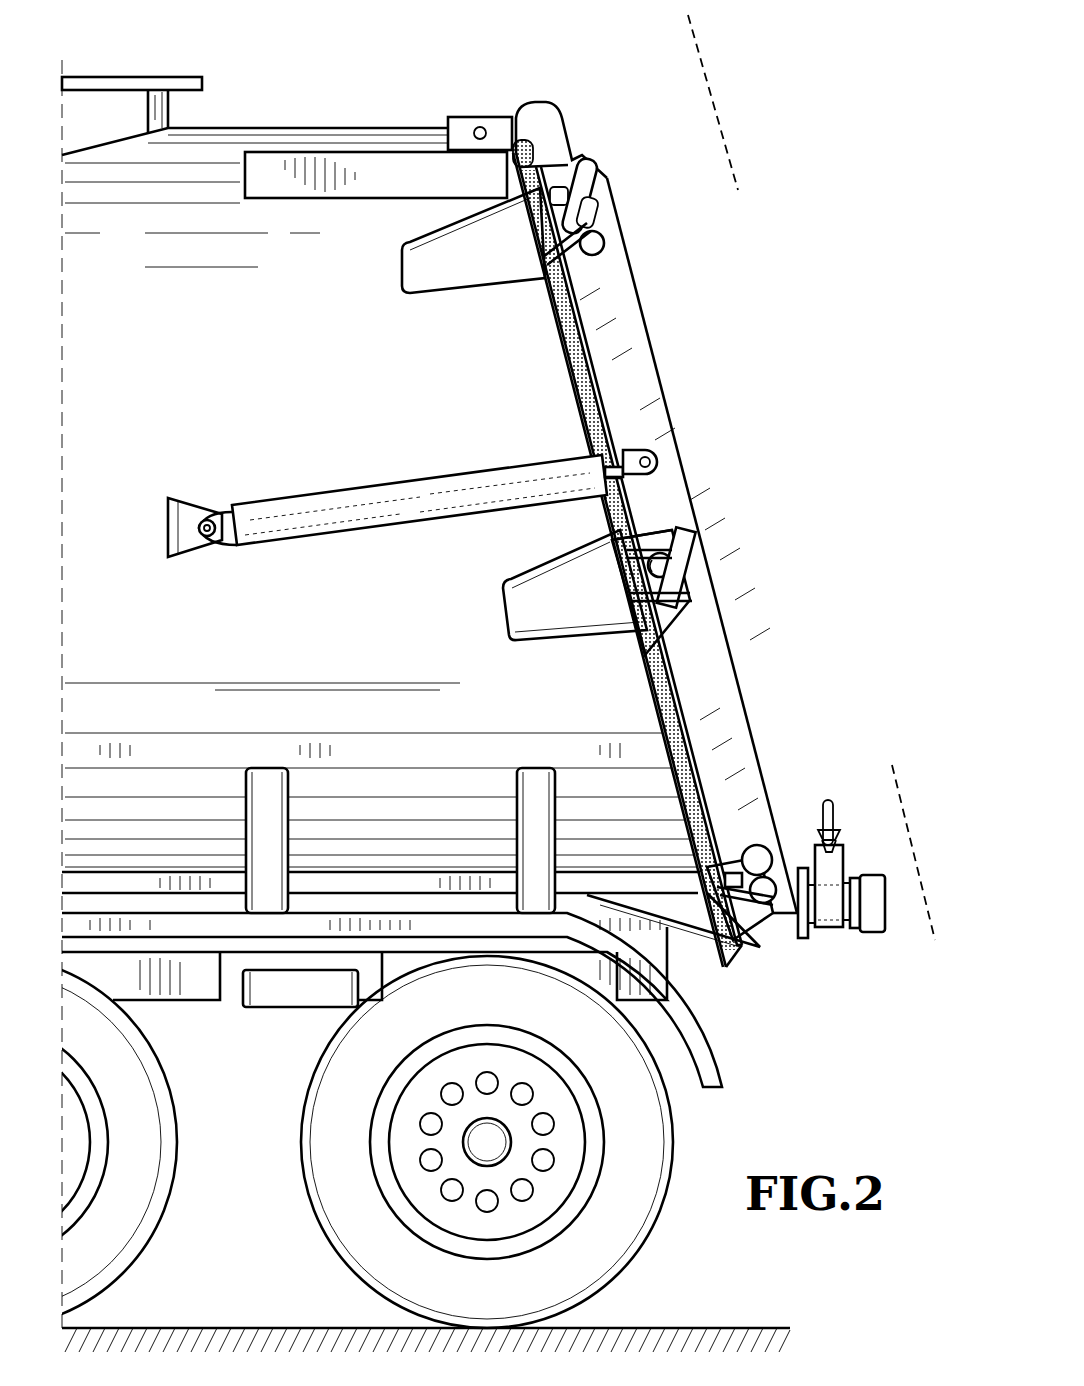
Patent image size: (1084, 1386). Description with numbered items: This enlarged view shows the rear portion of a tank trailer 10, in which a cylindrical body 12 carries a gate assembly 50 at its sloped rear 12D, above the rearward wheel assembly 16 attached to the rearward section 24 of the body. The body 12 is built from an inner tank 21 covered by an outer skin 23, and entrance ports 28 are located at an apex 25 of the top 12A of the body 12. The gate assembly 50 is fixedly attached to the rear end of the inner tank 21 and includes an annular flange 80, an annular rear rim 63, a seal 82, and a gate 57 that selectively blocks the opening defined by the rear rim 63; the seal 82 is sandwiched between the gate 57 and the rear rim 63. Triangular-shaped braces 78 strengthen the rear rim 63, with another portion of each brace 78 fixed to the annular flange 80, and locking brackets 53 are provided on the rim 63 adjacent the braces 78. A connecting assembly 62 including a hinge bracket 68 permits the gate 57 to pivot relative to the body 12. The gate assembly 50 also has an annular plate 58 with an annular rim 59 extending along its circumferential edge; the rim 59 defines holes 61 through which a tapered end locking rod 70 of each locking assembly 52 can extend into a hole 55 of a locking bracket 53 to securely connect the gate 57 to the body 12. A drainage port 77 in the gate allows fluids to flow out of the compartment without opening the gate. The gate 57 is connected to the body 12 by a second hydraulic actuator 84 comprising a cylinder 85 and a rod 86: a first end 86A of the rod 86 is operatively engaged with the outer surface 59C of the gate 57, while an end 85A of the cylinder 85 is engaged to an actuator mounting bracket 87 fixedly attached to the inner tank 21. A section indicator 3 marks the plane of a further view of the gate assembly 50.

The section line 3- 3 is at (688, 15).
The tank trailer 10 is at (780, 78).
The cylindrical body 12 is at (381, 451).
The top 12A is at (218, 118).
The rear 12D is at (670, 746).
The rearward wheel assembly 16 is at (650, 1250).
The inner tank 21 is at (162, 240).
The outer skin 23 is at (381, 451).
The rearward section 24 is at (302, 270).
The apex 25 is at (268, 128).
The entrance ports 28 is at (92, 77).
The gate assembly 50 is at (662, 324).
The locking assemblies 52 is at (726, 567).
The locking brackets 53 is at (548, 164).
The hole 55 is at (560, 190).
The gate 57 is at (727, 612).
The annular plate 58 is at (627, 500).
The annular rim 59 is at (693, 556).
The outer surface 59C is at (689, 510).
The holes 61 is at (600, 243).
The connecting assembly 62 is at (482, 112).
The annular rear rim 63 is at (668, 690).
The hinge bracket 68 is at (545, 122).
The tapered end locking rod 70 is at (602, 240).
The drainage port 77 is at (833, 935).
The triangular-shaped braces 78 is at (415, 255).
The annular flange 80 is at (525, 405).
The seal 82 is at (720, 690).
The second hydraulic actuator 84 is at (345, 490).
The cylinder 85 is at (405, 477).
The end 85A is at (200, 548).
The rod 86 is at (640, 455).
The first end 86A is at (656, 455).
The actuator mounting bracket 87 is at (193, 505).